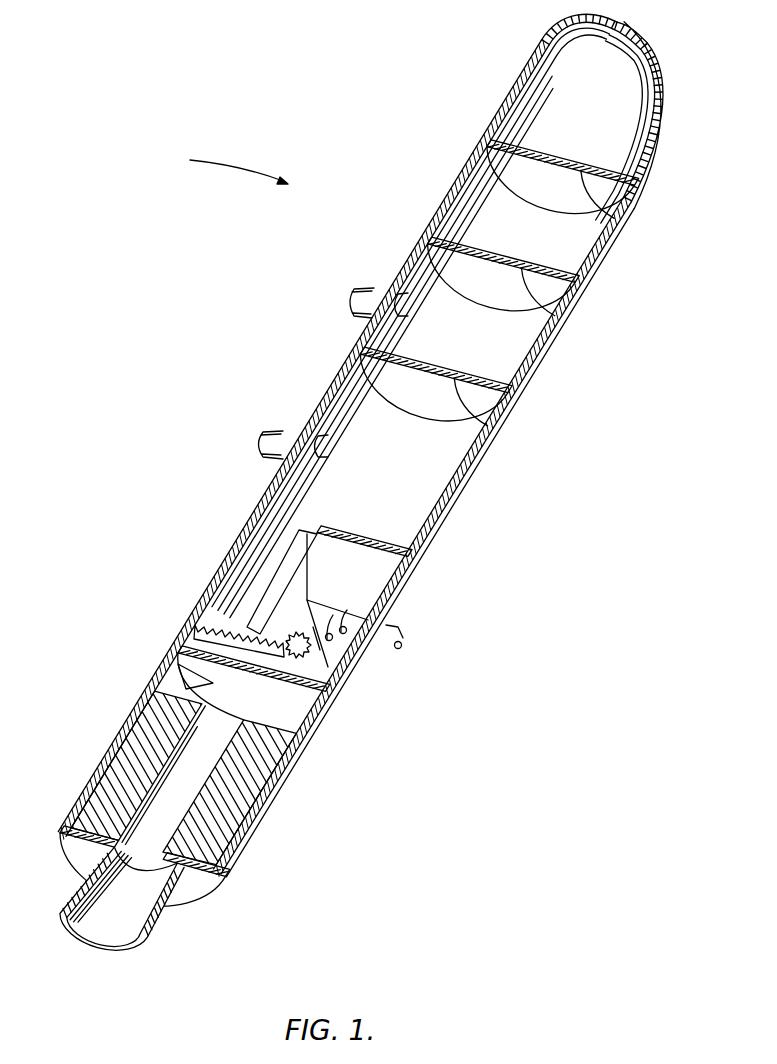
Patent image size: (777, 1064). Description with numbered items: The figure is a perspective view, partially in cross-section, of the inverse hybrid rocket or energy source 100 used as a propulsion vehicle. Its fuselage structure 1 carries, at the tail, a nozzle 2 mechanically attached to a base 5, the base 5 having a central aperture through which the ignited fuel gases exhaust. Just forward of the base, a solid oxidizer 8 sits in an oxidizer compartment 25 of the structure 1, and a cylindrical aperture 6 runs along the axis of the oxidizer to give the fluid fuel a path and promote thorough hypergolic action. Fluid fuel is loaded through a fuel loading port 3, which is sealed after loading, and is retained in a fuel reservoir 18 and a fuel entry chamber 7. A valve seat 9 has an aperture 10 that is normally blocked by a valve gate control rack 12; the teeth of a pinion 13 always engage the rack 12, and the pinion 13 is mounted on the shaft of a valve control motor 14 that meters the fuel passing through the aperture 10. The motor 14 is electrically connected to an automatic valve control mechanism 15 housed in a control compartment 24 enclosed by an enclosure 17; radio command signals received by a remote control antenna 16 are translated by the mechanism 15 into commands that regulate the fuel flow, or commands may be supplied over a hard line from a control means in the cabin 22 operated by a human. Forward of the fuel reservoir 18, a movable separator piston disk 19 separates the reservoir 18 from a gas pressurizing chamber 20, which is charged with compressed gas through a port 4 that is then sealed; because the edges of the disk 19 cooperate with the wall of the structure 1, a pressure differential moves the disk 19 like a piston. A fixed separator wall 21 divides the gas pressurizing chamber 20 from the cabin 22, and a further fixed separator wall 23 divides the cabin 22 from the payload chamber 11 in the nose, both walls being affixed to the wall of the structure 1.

The rocket motor / projectile assembly 100 is at (213, 166).
The fuselage structure 1 is at (128, 720).
The nozzle 2 is at (133, 956).
The fuel loading port 3 is at (268, 438).
The port 4 is at (370, 298).
The base 5 is at (193, 913).
The cylindrical aperture 6 is at (185, 790).
The fuel entry chamber 7 is at (253, 590).
The solid oxidizer 8 is at (270, 757).
The valve seat 9 is at (297, 710).
The aperture 10 is at (188, 668).
The payload chamber 11 is at (565, 98).
The valve gate control rack 12 is at (200, 642).
The pinion 13 is at (327, 687).
The valve control motor 14 is at (330, 672).
The automatic valve control mechanism 15 is at (370, 578).
The remote control antenna 16 is at (405, 641).
The enclosure 17 is at (303, 563).
The fuel reservoir 18 is at (363, 393).
The movable separator piston disk 19 is at (470, 433).
The gas pressurizing chamber 20 is at (438, 292).
The fixed separator wall 21 is at (535, 320).
The cabin 22 is at (497, 203).
The fixed separator wall 23 is at (580, 180).
The control compartment 24 is at (300, 580).
The oxidizer compartment 25 is at (88, 827).